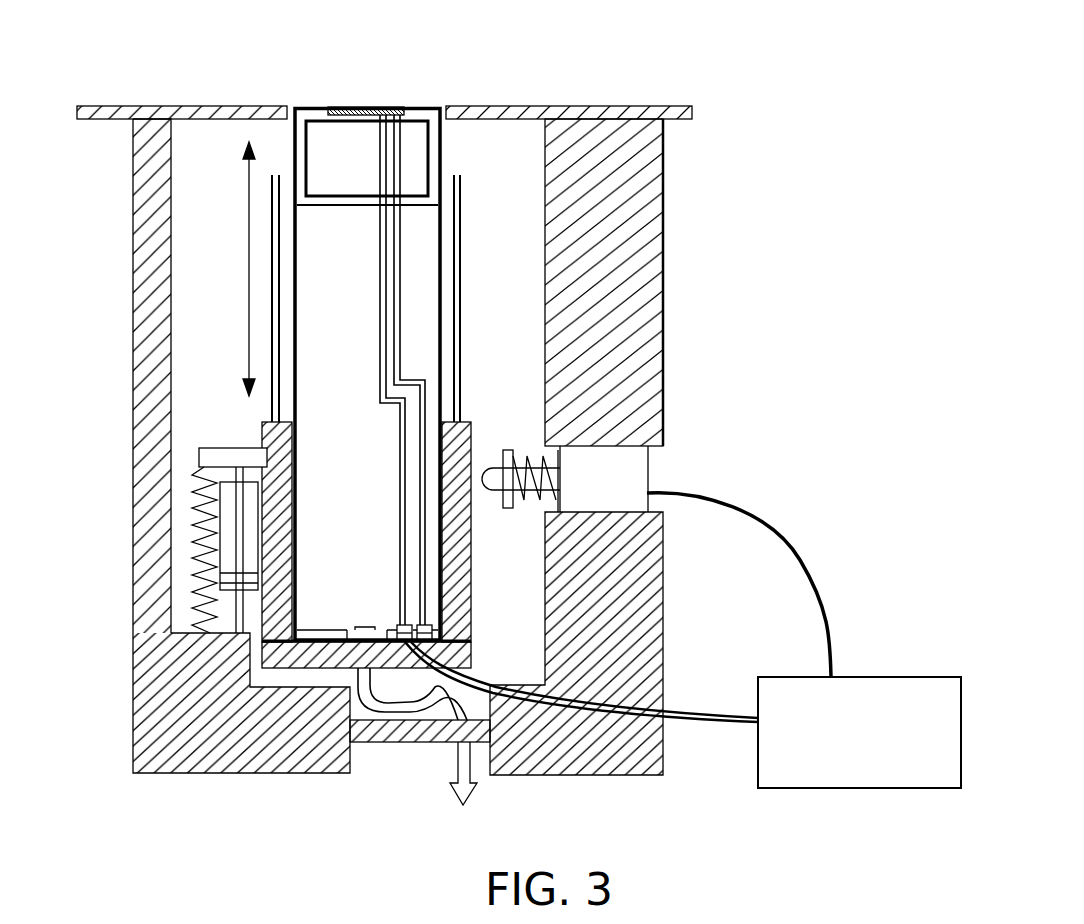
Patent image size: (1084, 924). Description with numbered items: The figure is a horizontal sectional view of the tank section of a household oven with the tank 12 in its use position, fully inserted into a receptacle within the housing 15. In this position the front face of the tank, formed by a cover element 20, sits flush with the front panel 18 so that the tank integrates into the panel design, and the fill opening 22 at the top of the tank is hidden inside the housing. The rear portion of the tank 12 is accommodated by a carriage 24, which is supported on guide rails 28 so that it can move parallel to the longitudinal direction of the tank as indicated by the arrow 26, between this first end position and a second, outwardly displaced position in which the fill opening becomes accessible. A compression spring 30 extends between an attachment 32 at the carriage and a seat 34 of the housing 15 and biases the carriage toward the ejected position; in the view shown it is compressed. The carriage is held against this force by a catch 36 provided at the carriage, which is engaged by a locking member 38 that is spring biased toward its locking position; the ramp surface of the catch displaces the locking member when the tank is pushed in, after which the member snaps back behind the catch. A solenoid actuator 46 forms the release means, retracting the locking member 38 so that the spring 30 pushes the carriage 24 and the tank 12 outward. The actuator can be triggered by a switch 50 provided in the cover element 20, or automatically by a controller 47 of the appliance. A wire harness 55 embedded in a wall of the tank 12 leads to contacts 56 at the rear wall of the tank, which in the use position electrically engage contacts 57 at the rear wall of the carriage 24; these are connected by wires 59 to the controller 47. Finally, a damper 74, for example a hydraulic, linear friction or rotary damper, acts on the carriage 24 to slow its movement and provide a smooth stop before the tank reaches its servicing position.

The tank 12 is at (422, 256).
The housing 15 is at (150, 205).
The front panel 18 is at (505, 107).
The cover element 20 is at (423, 115).
The fill opening 22 is at (318, 132).
The carriage 24 is at (545, 446).
The arrow 26 is at (250, 320).
The guide rails 28 is at (459, 323).
The compression spring 30 is at (193, 497).
The attachment 32 is at (210, 457).
The seat 34 is at (217, 628).
The catch 36 is at (492, 507).
The locking member 38 is at (540, 455).
The solenoid actuator 46 is at (630, 483).
The controller 47 is at (893, 690).
The switch 50 is at (368, 107).
The wire harness 55 is at (401, 287).
The contacts 56 is at (432, 630).
The contacts 57 is at (403, 643).
The wires 59 is at (712, 727).
The damper 74 is at (228, 537).